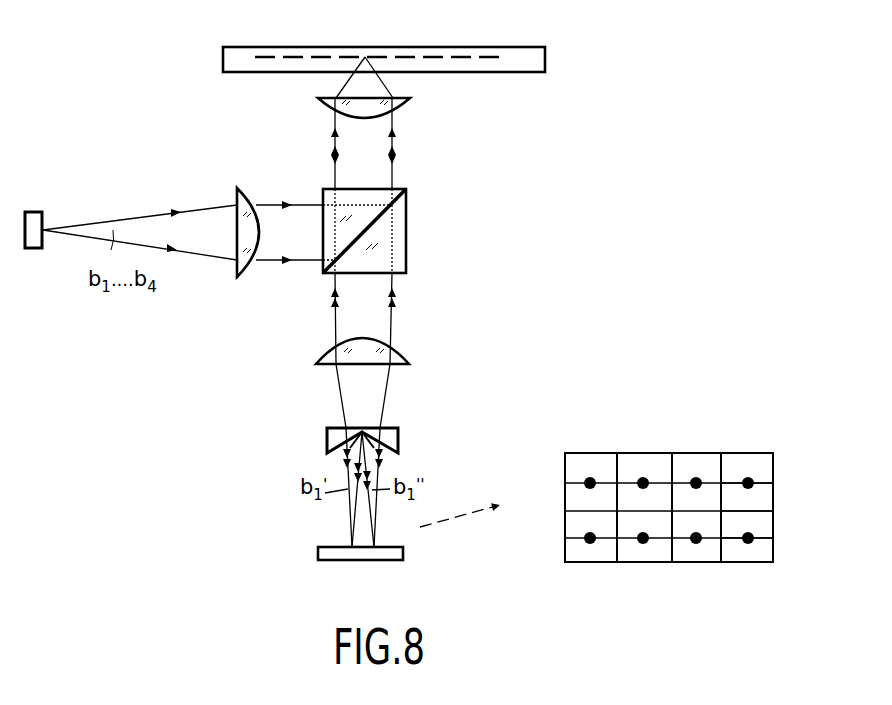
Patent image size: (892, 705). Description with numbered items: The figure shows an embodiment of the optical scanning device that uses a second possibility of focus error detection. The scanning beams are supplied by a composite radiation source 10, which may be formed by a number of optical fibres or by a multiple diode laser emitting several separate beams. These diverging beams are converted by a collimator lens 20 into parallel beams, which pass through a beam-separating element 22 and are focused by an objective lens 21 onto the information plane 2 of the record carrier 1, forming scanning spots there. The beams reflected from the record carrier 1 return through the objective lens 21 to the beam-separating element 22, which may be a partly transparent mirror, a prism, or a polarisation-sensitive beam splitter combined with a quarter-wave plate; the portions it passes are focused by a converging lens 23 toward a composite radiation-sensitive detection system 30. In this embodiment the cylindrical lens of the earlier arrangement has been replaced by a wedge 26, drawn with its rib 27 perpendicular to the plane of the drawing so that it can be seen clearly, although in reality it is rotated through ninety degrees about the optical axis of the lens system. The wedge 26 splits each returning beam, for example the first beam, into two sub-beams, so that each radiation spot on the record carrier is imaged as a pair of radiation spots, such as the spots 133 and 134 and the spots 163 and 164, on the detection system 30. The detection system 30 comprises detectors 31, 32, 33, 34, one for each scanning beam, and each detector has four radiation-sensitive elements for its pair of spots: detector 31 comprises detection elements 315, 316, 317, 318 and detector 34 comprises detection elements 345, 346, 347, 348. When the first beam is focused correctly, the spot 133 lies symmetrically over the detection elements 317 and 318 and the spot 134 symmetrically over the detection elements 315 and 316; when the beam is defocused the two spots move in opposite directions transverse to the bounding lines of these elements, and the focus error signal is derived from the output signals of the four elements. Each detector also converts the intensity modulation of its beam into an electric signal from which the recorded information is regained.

The record carrier 1 is at (434, 32).
The information plane 2 is at (460, 57).
The composite radiation source 10 is at (33, 250).
The collimator lens 20 is at (249, 279).
The objective lens 21 is at (410, 100).
The beam-separating element 22 is at (407, 230).
The converging lens 23 is at (408, 352).
The wedge 26 is at (399, 438).
The rib 27 is at (362, 430).
The composite radiation-sensitive detection system 30 is at (318, 554).
The detector 31 is at (594, 453).
The detector 32 is at (645, 453).
The detector 33 is at (697, 453).
The detector 34 is at (745, 453).
The detection element 315 is at (570, 471).
The detection element 316 is at (575, 498).
The detection element 317 is at (575, 526).
The detection element 318 is at (572, 554).
The detection element 345 is at (764, 468).
The detection element 346 is at (762, 499).
The detection element 347 is at (764, 526).
The detection element 348 is at (762, 554).
The radiation spot 134 is at (588, 478).
The radiation spot 164 is at (750, 478).
The radiation spot 133 is at (591, 544).
The radiation spot 163 is at (748, 544).